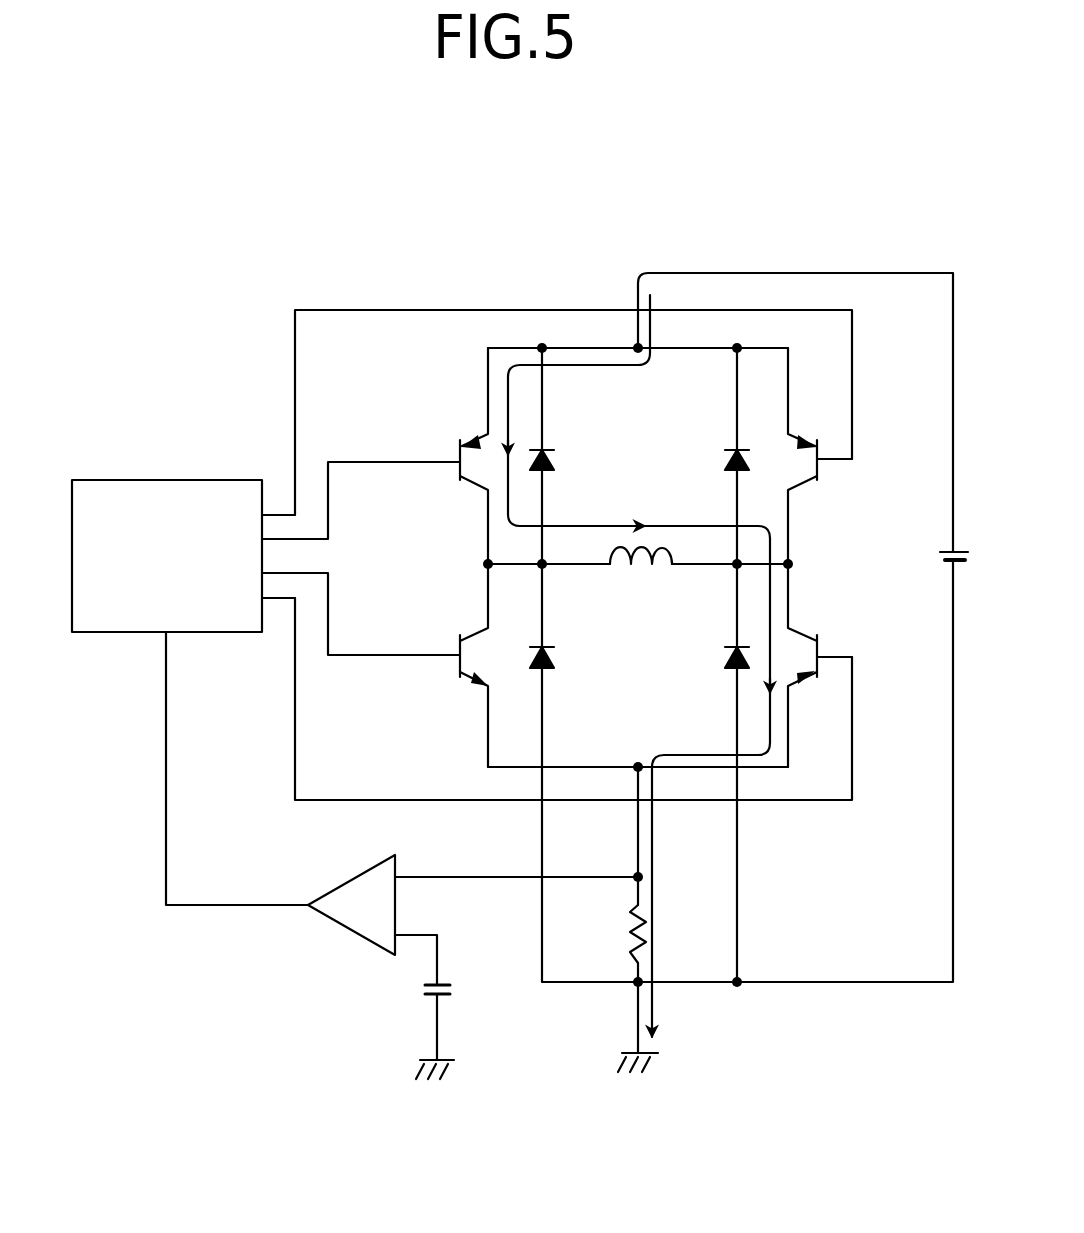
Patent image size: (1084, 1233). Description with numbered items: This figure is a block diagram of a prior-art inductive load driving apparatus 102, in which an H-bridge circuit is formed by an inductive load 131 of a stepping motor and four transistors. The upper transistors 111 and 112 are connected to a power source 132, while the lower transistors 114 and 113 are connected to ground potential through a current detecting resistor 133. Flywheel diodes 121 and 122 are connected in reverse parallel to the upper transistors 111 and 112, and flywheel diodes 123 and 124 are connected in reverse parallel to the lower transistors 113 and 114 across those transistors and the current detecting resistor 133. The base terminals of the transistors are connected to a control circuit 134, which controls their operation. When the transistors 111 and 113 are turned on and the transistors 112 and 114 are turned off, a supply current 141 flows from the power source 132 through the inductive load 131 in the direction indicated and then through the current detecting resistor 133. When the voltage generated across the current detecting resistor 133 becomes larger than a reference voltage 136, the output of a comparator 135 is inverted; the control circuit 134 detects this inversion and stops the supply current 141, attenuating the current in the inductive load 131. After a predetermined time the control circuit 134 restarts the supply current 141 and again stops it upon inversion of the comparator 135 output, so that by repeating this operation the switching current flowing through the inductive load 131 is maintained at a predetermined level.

The inductive load driving apparatus 102 is at (275, 238).
The upper transistor 111 is at (480, 440).
The upper transistor 112 is at (805, 428).
The lower transistor 113 is at (805, 631).
The lower transistor 114 is at (472, 630).
The flywheel diode 121 is at (554, 458).
The flywheel diode 122 is at (730, 442).
The flywheel diode 123 is at (712, 655).
The flywheel diode 124 is at (560, 650).
The inductive load 131 is at (640, 582).
The power source 132 is at (934, 556).
The current detecting resistor 133 is at (630, 939).
The control circuit 134 is at (160, 481).
The comparator 135 is at (342, 936).
The reference voltage 136 is at (455, 992).
The supply current 141 is at (655, 900).